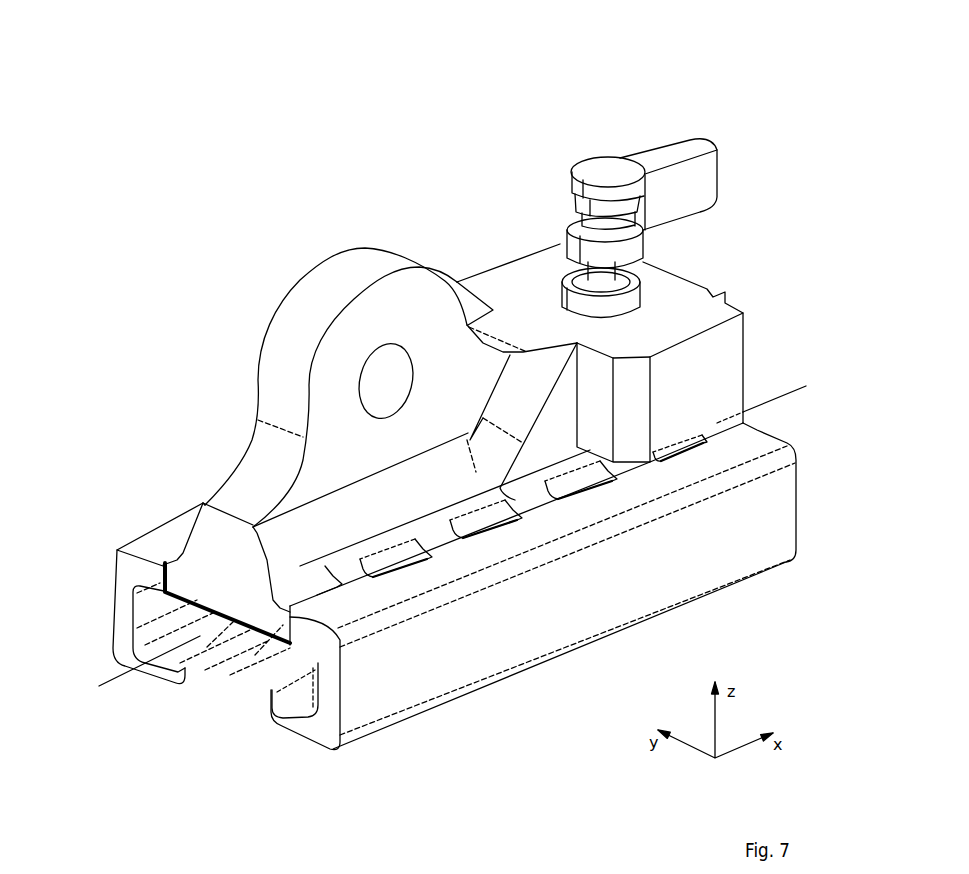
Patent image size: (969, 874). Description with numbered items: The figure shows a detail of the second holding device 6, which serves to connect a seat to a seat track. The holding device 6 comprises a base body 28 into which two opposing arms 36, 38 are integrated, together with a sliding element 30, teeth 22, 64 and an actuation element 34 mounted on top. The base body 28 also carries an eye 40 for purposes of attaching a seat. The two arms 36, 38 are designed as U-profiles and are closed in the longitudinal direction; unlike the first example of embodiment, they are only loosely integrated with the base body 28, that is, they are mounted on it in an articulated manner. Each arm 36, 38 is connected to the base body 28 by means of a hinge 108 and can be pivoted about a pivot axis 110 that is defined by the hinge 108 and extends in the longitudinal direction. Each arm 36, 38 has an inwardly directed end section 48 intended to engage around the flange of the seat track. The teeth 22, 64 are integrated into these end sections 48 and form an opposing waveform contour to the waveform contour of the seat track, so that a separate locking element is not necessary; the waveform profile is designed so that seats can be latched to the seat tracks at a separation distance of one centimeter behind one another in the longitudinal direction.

The holding device 6 is at (154, 37).
The teeth 22 is at (300, 693).
The base body 28 is at (328, 252).
The sliding element 30 is at (171, 603).
The actuation element 34 is at (687, 131).
The arm 36 is at (111, 572).
The arm 38 is at (796, 490).
The eye 40 is at (385, 383).
The end section 48 is at (137, 670).
The teeth 64 is at (193, 627).
The hinge 108 is at (593, 465).
The pivot axis 110 is at (767, 400).